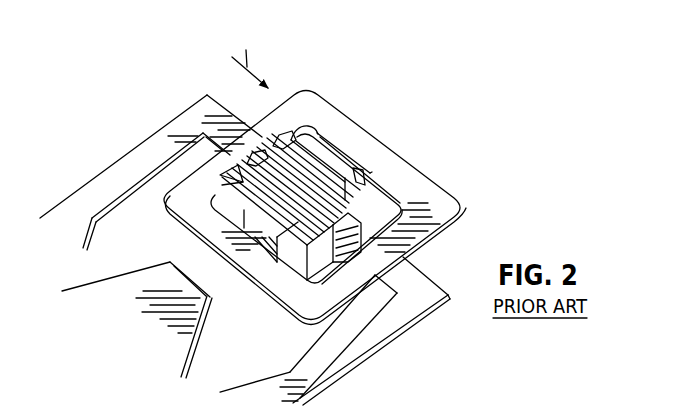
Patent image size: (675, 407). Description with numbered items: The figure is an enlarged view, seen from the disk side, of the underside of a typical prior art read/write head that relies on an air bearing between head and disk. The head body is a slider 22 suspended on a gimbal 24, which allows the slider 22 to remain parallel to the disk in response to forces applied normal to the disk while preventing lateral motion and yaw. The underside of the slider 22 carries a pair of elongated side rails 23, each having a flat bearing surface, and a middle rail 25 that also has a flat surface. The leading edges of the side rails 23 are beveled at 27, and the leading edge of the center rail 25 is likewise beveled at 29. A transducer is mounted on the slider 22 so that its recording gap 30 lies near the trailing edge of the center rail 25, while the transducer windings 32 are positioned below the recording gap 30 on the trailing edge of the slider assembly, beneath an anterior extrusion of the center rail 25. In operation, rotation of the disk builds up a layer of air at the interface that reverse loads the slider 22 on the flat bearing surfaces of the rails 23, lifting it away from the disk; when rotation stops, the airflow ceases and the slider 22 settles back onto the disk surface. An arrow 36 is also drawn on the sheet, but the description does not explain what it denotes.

The slider 22 is at (363, 152).
The elongated rails 23 is at (302, 228).
The gimbal 24 is at (430, 192).
The middle rail 25 is at (315, 195).
The beveled leading edges of side rails 27 is at (224, 177).
The beveled leading edge of center rail 29 is at (254, 156).
The recording gap 30 is at (336, 224).
The transducer windings 32 is at (362, 239).
The insertion direction arrow 36 is at (250, 56).